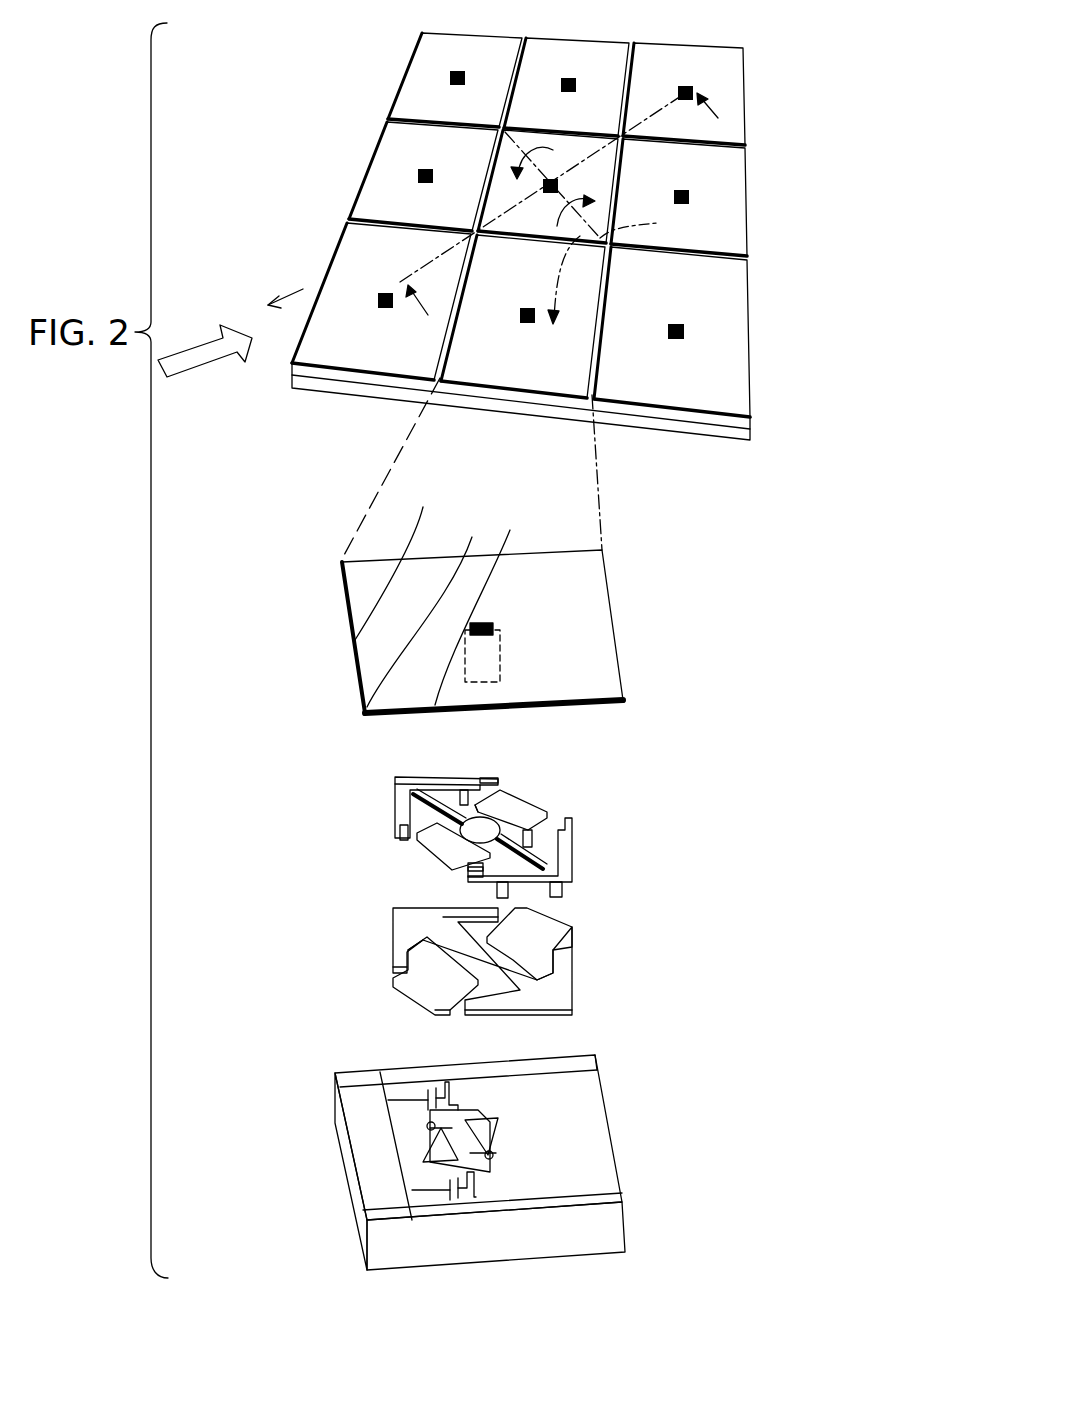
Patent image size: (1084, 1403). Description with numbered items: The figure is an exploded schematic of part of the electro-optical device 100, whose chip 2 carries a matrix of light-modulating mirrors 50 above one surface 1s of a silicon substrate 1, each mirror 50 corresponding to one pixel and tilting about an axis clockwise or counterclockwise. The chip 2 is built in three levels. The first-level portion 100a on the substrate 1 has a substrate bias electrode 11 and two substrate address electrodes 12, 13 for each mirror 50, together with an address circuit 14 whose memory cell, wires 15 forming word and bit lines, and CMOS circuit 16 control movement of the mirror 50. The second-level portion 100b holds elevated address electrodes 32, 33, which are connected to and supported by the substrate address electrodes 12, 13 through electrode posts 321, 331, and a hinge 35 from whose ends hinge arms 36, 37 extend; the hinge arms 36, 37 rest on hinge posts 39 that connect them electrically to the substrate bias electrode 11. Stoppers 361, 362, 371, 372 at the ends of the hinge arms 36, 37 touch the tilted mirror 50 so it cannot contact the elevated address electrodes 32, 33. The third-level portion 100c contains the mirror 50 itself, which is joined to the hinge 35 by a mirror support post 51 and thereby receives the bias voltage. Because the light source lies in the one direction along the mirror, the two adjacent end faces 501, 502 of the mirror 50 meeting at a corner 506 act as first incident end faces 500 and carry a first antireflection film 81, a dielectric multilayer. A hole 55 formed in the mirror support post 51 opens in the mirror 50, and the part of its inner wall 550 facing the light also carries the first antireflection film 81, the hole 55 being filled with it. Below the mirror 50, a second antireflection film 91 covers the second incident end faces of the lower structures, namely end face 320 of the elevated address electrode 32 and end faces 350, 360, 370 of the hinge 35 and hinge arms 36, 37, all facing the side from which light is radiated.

The electro-optical device 100 is at (518, 295).
The chip 2 is at (518, 295).
The mirror 50 is at (727, 198).
The hole 55 is at (377, 297).
The inner wall 550 is at (494, 628).
The mirror support post 51 is at (500, 657).
The first antireflection film 81 is at (390, 292).
The end face 501 is at (417, 562).
The end face 502 is at (510, 606).
The first incident end faces 500 is at (417, 562).
The corner 506 is at (428, 611).
The substrate 1 is at (491, 1172).
The surface 1s is at (623, 1197).
The address circuit 14 is at (566, 1208).
The wires 15 is at (397, 1205).
The CMOS circuit 16 is at (510, 1125).
The substrate bias electrode 11 is at (560, 990).
The substrate address electrode 12 is at (413, 988).
The substrate address electrode 13 is at (566, 927).
The first-level portion 100a is at (566, 960).
The second-level portion 100b is at (489, 847).
The third-level portion 100c is at (583, 582).
The elevated address electrode 32 is at (345, 857).
The elevated address electrode 33 is at (580, 840).
The hinge 35 is at (501, 800).
The hinge arm 36 is at (441, 885).
The hinge arm 37 is at (386, 796).
The hinge posts 39 is at (509, 893).
The second antireflection film 91 is at (386, 796).
The end face 320 is at (345, 857).
The electrode post 321 is at (471, 868).
The electrode post 331 is at (530, 843).
The end face 350 is at (433, 790).
The end face 360 is at (441, 885).
The stopper 361 is at (573, 820).
The stopper 362 is at (490, 882).
The end face 370 is at (386, 796).
The stopper 371 is at (499, 778).
The stopper 372 is at (400, 828).